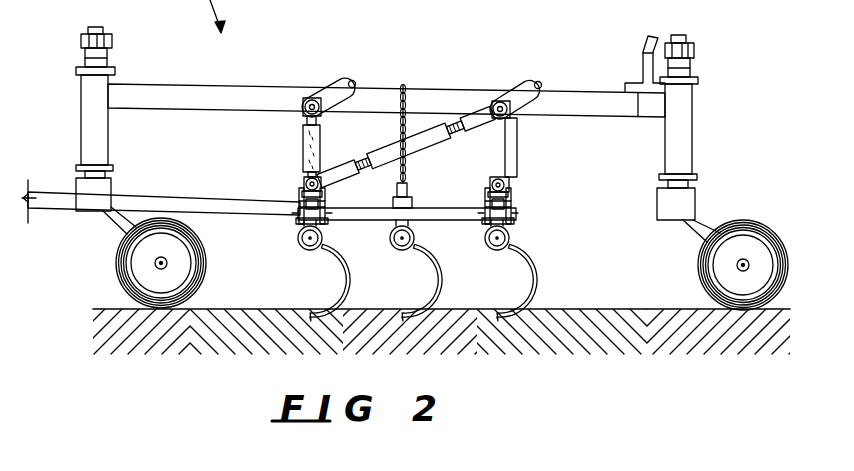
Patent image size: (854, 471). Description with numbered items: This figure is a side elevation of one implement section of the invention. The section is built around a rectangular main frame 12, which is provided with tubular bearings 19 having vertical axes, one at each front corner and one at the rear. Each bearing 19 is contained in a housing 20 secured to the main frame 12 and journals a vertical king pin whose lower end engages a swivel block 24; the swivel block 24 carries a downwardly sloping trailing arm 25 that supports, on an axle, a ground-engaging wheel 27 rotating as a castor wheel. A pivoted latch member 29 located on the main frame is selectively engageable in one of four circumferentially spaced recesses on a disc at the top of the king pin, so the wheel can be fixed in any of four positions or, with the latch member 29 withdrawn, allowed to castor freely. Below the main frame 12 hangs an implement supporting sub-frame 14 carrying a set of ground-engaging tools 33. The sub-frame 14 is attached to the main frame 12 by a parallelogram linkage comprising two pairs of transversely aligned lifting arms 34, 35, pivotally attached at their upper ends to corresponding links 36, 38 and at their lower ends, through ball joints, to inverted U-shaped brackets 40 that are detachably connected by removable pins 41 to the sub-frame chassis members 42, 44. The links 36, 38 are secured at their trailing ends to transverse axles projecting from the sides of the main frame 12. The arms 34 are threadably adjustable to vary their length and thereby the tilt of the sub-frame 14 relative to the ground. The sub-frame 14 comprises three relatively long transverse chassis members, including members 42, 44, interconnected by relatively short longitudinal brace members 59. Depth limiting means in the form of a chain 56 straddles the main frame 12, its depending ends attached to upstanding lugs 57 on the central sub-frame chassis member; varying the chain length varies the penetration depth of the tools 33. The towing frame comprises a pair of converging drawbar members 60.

The main frame 12 is at (159, 85).
The implement supporting sub-frame 14 is at (442, 213).
The tubular bearing 19 is at (89, 36).
The housing 20 is at (82, 116).
The swivel block 24 is at (104, 207).
The trailing arm 25 is at (120, 226).
The ground-engaging wheel 27 is at (118, 276).
The pivoted latch member 29 is at (649, 40).
The ground-engaging tools 33 is at (343, 274).
The lifting arm 34 is at (303, 145).
The lifting arm 35 is at (518, 138).
The link 36 is at (325, 92).
The link 38 is at (516, 92).
The inverted U-shaped bracket 40 is at (298, 192).
The removable pin 41 is at (297, 216).
The sub-frame chassis member 42 is at (323, 198).
The sub-frame chassis member 44 is at (514, 204).
The chain 56 is at (406, 97).
The upstanding lug 57 is at (406, 190).
The longitudinal brace member 59 is at (373, 214).
The drawbar member 60 is at (44, 198).